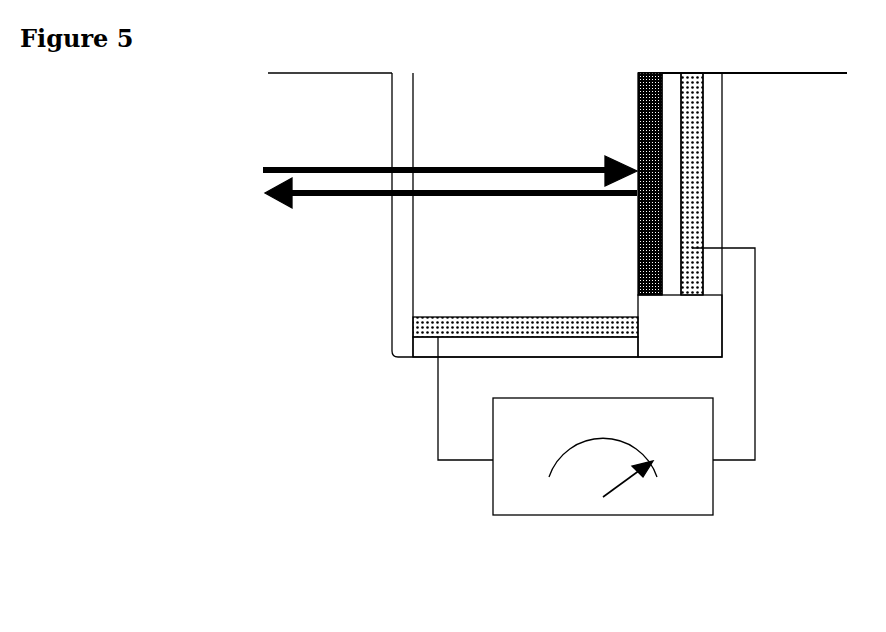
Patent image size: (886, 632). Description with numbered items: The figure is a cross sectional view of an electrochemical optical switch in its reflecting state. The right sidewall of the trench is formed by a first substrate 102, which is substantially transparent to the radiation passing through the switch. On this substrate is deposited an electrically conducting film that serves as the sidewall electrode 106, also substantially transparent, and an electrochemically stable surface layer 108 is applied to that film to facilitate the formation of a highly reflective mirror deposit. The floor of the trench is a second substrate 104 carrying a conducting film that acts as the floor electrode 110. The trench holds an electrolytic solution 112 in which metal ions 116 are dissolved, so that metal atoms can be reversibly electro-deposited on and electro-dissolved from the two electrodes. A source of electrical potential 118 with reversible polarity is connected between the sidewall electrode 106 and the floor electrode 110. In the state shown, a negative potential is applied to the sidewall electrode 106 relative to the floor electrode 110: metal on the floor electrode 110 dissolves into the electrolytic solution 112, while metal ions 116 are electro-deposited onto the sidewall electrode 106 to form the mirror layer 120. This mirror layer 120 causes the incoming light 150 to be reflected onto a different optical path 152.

The first substrate 102 is at (405, 125).
The second substrate 104 is at (430, 345).
The sidewall electrode 106 is at (691, 90).
The surface layer 108 is at (672, 107).
The floor electrode 110 is at (430, 328).
The electrolytic solution 112 is at (557, 112).
The metal ions 116 is at (459, 98).
The source of electrical potential 118 is at (625, 495).
The mirror layer 120 is at (641, 80).
The incoming light 150 is at (292, 165).
The different optical path 152 is at (280, 203).